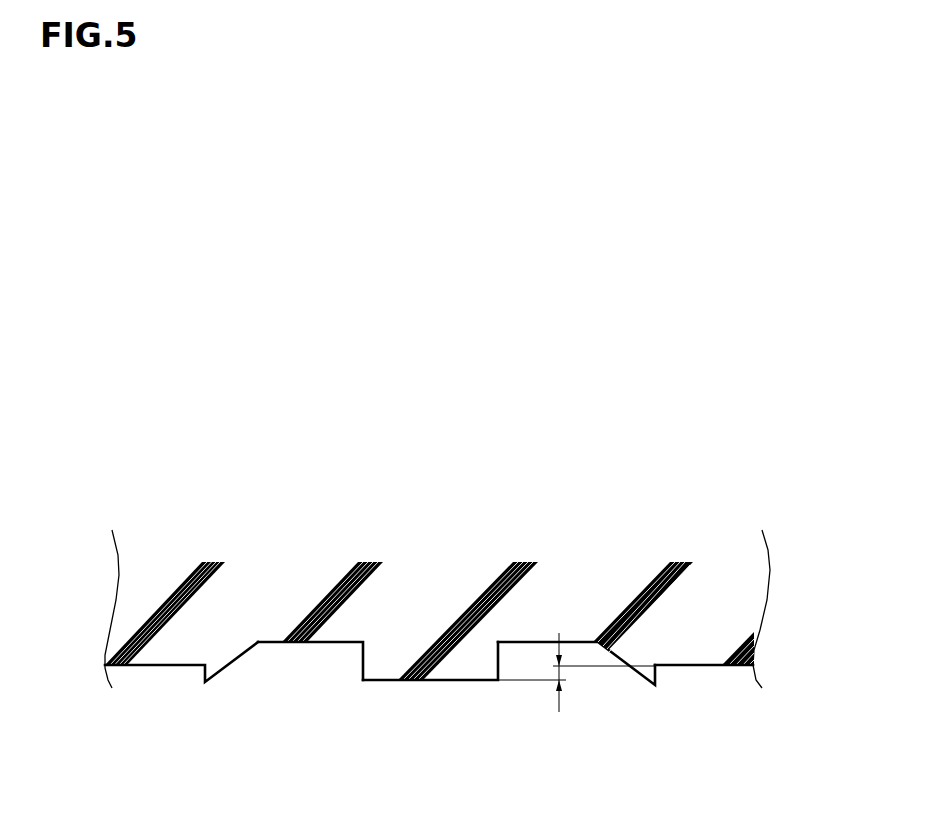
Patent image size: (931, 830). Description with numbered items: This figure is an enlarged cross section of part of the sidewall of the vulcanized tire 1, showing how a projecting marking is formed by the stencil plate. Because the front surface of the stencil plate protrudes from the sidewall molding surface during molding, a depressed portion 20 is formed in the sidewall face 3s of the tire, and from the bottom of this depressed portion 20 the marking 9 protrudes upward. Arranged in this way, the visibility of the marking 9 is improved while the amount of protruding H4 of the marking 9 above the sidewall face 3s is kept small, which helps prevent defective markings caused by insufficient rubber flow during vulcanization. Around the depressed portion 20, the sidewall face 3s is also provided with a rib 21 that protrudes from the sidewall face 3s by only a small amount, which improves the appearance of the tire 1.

The blade body 1 is at (428, 558).
The rib 21 is at (210, 683).
The depressed portion 20 is at (310, 642).
The marking 9 is at (430, 680).
The sidewall face 3s is at (690, 665).
The amount of protruding of the marking H4 is at (559, 673).